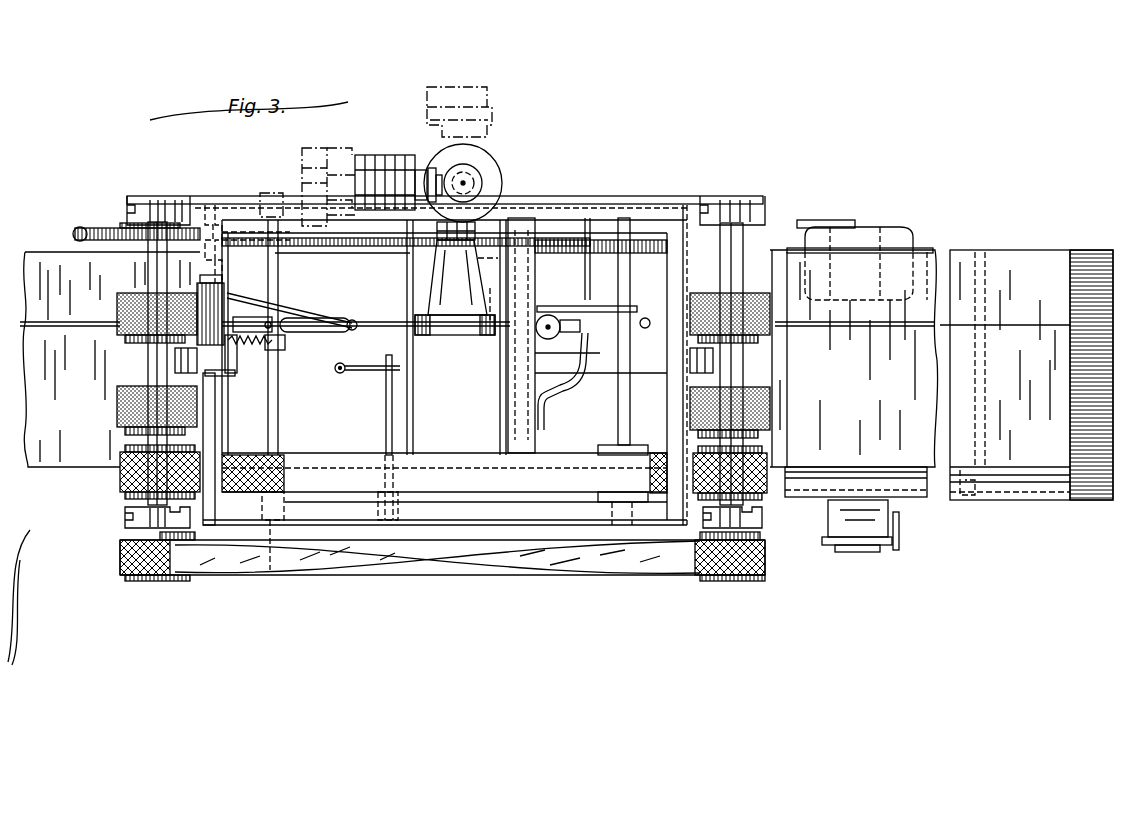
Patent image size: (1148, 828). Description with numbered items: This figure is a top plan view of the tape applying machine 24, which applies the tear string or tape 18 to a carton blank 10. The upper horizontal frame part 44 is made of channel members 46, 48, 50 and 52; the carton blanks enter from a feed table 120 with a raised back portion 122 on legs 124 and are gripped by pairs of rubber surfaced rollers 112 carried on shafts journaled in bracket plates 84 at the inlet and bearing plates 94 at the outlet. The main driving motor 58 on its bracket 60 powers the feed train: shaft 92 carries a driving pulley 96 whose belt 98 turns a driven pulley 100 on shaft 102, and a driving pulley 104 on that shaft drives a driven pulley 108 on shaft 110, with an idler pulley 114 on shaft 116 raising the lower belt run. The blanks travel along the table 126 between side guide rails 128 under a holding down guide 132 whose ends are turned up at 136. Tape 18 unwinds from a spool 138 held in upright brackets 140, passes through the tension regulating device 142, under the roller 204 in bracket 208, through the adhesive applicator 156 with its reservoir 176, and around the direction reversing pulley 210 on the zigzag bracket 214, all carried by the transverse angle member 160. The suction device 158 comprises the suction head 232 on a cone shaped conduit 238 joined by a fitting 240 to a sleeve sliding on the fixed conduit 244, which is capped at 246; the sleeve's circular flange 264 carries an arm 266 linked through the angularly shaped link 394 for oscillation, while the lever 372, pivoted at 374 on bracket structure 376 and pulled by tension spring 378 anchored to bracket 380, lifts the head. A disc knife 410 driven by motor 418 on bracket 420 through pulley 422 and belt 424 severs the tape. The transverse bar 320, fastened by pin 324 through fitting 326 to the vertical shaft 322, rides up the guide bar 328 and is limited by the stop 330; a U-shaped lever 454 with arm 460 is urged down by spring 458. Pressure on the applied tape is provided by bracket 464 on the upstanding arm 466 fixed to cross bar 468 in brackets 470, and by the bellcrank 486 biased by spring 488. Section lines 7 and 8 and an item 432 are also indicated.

The carton blank 10 is at (1060, 468).
The tape 18 is at (270, 290).
The side guide rail 128 is at (578, 250).
The upper horizontal frame part 44 is at (474, 533).
The channel member 50 is at (220, 428).
The bracket 380 is at (193, 232).
The pivot 374 is at (170, 268).
The bracket structure 376 is at (223, 243).
The spool 138 is at (215, 285).
The upright bracket 140 is at (200, 268).
The channel member 52 is at (770, 447).
The rubber surfaced roller 112 is at (768, 418).
The turned up end 136 is at (765, 368).
The shaft 110 is at (150, 368).
The shaft 102 is at (775, 388).
The driven pulley 108 is at (120, 452).
The bearing plate 94 is at (125, 515).
The bracket plate 84 is at (762, 528).
The shaft 92 is at (132, 558).
The belt 98 is at (575, 566).
The driving pulley 96 is at (185, 585).
The driven pulley 100 is at (762, 578).
The channel member 46 is at (340, 510).
The vertical shaft 322 is at (388, 530).
The idler pulley 114 is at (615, 505).
The bracket 470 is at (275, 490).
The bracket 60 is at (800, 222).
The main driving motor 58 is at (888, 228).
The raised back portion 122 is at (1068, 255).
The driving pulley 104 is at (770, 520).
The bracket 432 is at (900, 552).
The leg 124 is at (958, 495).
The table 120 is at (1030, 488).
The machine 24 is at (708, 179).
The channel member 48 is at (583, 230).
The motor 418 is at (368, 152).
The disc knife 410 is at (428, 350).
The pulley 422 is at (428, 168).
The bracket 420 is at (380, 183).
The suction head 232 is at (478, 314).
The circular flange 264 is at (478, 148).
The cap 246 is at (497, 168).
The fixed conduit 244 is at (480, 165).
The fitting 240 is at (482, 224).
The arm 266 is at (535, 195).
The tension regulating device 142 is at (330, 318).
The upstanding arm 466 is at (275, 310).
The spring 488 is at (265, 340).
The bracket 464 is at (285, 345).
The bellcrank 486 is at (245, 380).
The stop 330 is at (340, 362).
The guide bar 328 is at (362, 372).
The transverse bar 320 is at (385, 407).
The cross bar 468 is at (275, 424).
The pin 324 is at (370, 462).
The fitting 326 is at (380, 477).
The table 126 is at (462, 462).
The transverse angle member 160 is at (475, 407).
The holding down guide 132 is at (500, 370).
The bracket 208 is at (510, 358).
The suction device 158 is at (415, 318).
The cone shaped conduit 238 is at (400, 272).
The belt 424 is at (400, 291).
The angularly shaped link 394 is at (497, 265).
The roller 204 is at (499, 293).
The section line 8 is at (495, 316).
The section line 7 is at (106, 315).
The spring 458 is at (535, 312).
The adhesive applicator 156 is at (566, 318).
The arm 460 is at (618, 310).
The U-shaped lever 454 is at (652, 305).
The reservoir 176 is at (548, 340).
The direction reversing pulley 210 is at (608, 341).
The zigzag bracket 214 is at (585, 378).
The shaft 116 is at (618, 428).
The lever 372 is at (112, 228).
The tension spring 378 is at (80, 216).